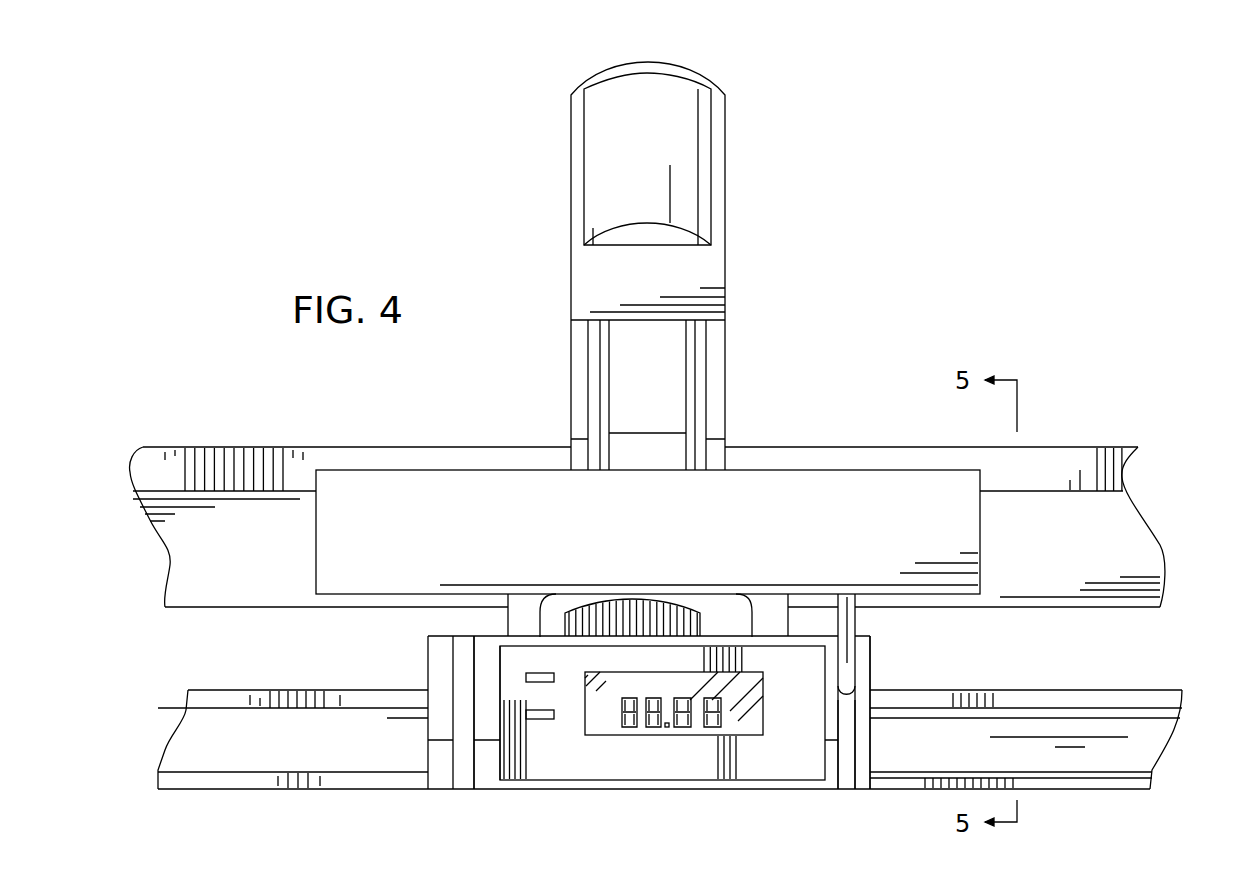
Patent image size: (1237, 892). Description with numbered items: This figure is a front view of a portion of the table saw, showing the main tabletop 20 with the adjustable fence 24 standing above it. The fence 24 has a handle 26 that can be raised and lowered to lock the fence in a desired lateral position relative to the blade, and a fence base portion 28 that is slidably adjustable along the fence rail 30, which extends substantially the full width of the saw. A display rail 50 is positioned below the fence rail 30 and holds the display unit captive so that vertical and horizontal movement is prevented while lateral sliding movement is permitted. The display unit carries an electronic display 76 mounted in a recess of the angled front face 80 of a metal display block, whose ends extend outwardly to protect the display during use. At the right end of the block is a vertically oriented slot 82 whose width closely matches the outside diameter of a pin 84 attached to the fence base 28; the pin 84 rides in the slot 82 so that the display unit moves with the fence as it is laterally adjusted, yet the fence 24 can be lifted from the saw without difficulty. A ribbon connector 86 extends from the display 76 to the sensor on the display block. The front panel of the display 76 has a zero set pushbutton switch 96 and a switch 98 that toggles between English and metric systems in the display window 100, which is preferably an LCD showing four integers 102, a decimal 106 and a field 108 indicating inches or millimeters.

The main tabletop 20 is at (1060, 447).
The adjustable fence 24 is at (685, 266).
The handle 26 is at (615, 164).
The fence base portion 28 is at (810, 502).
The fence rail 30 is at (1095, 525).
The display rail 50 is at (1167, 750).
The electronic display 76 is at (795, 762).
The angled front face 80 is at (489, 727).
The vertically oriented slot 82 is at (847, 772).
The pin 84 is at (847, 620).
The ribbon connector 86 is at (608, 610).
The pushbutton switch 96 is at (555, 714).
The switch 98 is at (525, 677).
The display window 100 is at (745, 720).
The integers 102 is at (653, 727).
The decimal 106 is at (667, 728).
The field 108 is at (598, 727).